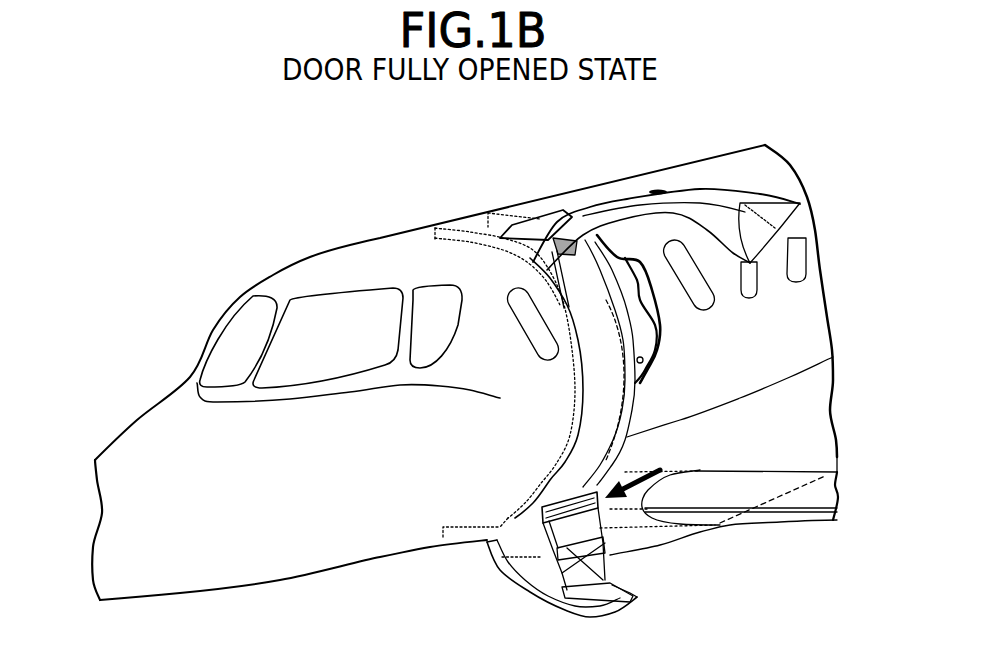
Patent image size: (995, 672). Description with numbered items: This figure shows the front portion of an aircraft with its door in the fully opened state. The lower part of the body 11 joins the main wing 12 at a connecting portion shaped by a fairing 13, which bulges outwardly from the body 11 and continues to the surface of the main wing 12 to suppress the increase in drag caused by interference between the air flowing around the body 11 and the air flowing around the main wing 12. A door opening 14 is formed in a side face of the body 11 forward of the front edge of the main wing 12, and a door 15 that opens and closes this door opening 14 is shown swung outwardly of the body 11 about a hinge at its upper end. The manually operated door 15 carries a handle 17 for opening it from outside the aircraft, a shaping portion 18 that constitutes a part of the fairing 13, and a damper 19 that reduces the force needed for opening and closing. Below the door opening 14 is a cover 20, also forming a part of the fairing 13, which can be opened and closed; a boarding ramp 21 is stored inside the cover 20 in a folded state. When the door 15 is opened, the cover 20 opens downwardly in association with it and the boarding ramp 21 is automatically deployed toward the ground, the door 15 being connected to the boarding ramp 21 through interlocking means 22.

The body 11 is at (677, 158).
The main wing 12 is at (763, 533).
The fairing 13 is at (805, 453).
The door opening 14 is at (588, 380).
The door 15 is at (720, 200).
The handle 17 is at (652, 186).
The shaping portion 18 is at (767, 203).
The damper 19 is at (552, 273).
The cover 20 is at (545, 590).
The boarding ramp 21 is at (614, 565).
The interlocking means 22 is at (650, 358).